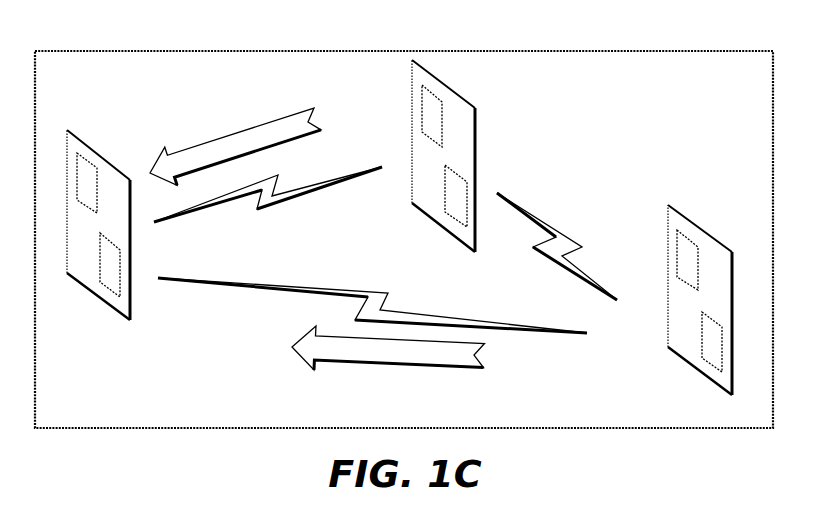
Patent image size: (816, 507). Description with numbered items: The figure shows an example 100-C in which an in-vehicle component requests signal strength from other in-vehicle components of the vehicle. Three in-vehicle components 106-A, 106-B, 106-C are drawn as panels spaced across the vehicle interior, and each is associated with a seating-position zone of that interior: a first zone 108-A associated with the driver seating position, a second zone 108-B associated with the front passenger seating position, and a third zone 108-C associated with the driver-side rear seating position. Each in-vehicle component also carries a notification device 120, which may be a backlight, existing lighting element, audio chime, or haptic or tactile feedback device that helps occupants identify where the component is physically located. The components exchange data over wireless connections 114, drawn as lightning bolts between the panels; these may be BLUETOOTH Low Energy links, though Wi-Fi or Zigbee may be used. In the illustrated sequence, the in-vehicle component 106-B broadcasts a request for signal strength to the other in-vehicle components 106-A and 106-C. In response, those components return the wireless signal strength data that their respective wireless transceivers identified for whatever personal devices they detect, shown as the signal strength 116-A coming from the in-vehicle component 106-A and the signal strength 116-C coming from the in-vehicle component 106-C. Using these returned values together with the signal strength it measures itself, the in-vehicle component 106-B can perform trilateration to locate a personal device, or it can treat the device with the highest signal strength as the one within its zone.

The communication environment 100-C is at (118, 38).
The in-vehicle component 106-A is at (410, 93).
The in-vehicle component 106-B is at (89, 146).
The in-vehicle component 106-C is at (667, 237).
The first zone 108-A is at (422, 117).
The second zone 108-B is at (97, 162).
The third zone 108-C is at (677, 258).
The wireless connection 114 is at (300, 198).
The signal strength 116-A is at (233, 135).
The signal strength 116-C is at (397, 372).
The notification device 120 is at (112, 293).